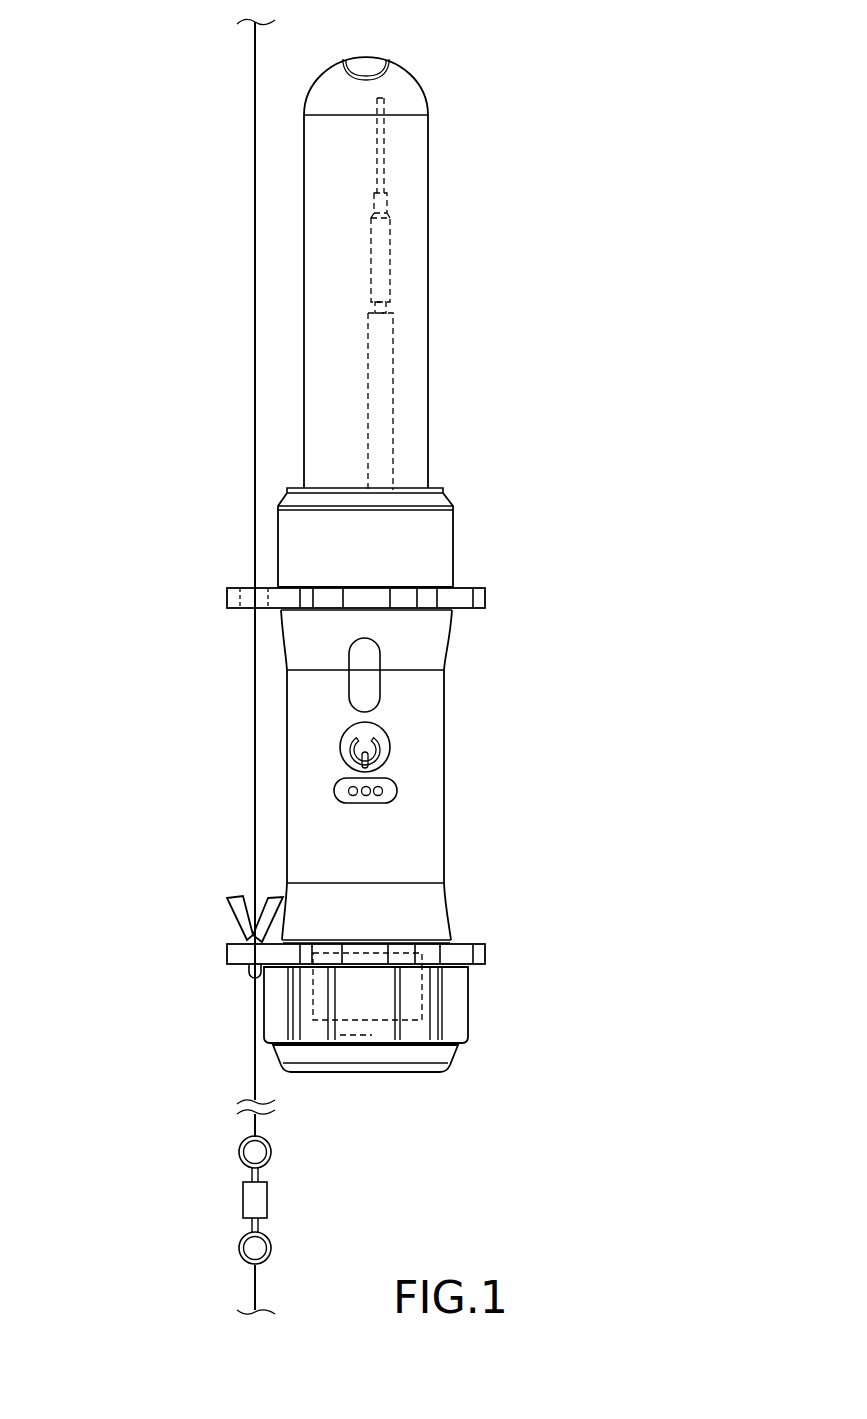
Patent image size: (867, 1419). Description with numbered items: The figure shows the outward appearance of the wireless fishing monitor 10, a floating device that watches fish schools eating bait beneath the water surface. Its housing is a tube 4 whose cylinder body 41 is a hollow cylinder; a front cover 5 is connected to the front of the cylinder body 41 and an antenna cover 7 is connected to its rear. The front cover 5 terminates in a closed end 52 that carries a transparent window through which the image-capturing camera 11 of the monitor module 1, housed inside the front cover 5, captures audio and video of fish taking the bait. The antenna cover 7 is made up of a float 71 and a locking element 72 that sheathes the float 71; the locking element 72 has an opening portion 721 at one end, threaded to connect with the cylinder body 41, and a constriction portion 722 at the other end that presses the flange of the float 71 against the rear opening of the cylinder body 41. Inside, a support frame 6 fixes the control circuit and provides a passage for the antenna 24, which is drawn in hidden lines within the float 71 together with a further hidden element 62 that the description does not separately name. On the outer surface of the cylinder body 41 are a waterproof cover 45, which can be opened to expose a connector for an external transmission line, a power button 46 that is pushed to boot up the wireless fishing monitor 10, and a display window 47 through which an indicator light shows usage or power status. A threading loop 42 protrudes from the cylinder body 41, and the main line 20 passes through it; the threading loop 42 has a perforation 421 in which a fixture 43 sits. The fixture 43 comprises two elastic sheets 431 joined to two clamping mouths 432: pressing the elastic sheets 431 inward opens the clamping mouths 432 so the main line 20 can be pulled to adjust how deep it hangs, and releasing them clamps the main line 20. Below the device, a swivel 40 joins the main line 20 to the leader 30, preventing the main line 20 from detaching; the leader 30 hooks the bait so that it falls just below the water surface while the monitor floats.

The monitor module 1 is at (378, 1045).
The tube 4 is at (422, 776).
The front cover 5 is at (418, 1058).
The support frame 6 is at (440, 294).
The antenna cover 7 is at (424, 272).
The wireless fishing monitor 10 is at (372, 610).
The image-capturing camera 11 is at (410, 995).
The main line 20 is at (255, 778).
The antenna 24 is at (388, 255).
The leader 30 is at (253, 1289).
The swivel 40 is at (245, 1203).
The cylinder body 41 is at (430, 855).
The threading loop 42 is at (307, 563).
The fixture 43 is at (188, 927).
The waterproof cover 45 is at (370, 689).
The power button 46 is at (373, 740).
The display window 47 is at (388, 792).
The closed end 52 is at (433, 1067).
The lower bulb section 62 is at (390, 413).
The float 71 is at (413, 150).
The locking element 72 is at (427, 523).
The perforation 421 is at (243, 583).
The elastic sheets 431 is at (237, 902).
The clamping mouths 432 is at (247, 968).
The opening portion 721 is at (422, 586).
The constriction portion 722 is at (438, 488).